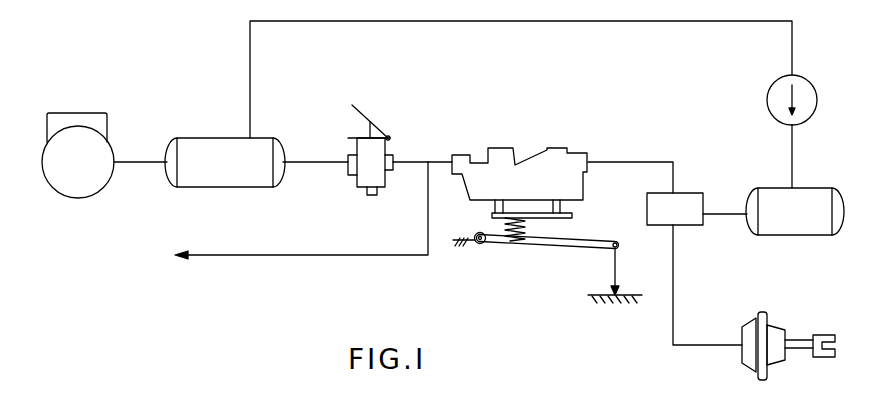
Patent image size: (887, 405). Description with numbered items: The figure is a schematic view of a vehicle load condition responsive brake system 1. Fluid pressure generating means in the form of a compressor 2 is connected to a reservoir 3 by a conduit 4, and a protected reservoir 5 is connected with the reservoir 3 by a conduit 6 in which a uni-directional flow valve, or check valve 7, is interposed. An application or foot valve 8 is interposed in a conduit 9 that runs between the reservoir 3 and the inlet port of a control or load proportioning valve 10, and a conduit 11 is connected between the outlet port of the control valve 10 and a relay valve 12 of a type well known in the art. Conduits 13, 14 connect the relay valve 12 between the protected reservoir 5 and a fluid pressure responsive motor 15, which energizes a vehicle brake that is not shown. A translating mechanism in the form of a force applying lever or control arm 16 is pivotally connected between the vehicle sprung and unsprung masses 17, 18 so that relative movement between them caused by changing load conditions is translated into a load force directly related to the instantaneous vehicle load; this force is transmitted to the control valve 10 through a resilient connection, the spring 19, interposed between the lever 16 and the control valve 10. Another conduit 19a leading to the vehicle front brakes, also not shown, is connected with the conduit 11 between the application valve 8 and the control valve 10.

The vehicle load condition responsive brake system 1 is at (180, 96).
The compressor 2 is at (75, 113).
The reservoir 3 is at (236, 175).
The conduit 4 is at (143, 165).
The protected reservoir 5 is at (808, 223).
The conduit 6 is at (450, 23).
The check valve 7 is at (767, 98).
The application valve 8 is at (365, 180).
The conduit 9 is at (303, 160).
The control valve 10 is at (537, 190).
The conduit 11 is at (604, 158).
The relay valve 12 is at (690, 192).
The conduit 13 is at (727, 215).
The conduit 14 is at (692, 343).
The fluid pressure responsive motor 15 is at (770, 371).
The control arm 16 is at (580, 244).
The vehicle sprung mass 17 is at (463, 248).
The vehicle unsprung mass 18 is at (610, 303).
The spring 19 is at (537, 243).
The conduit 19a is at (428, 221).